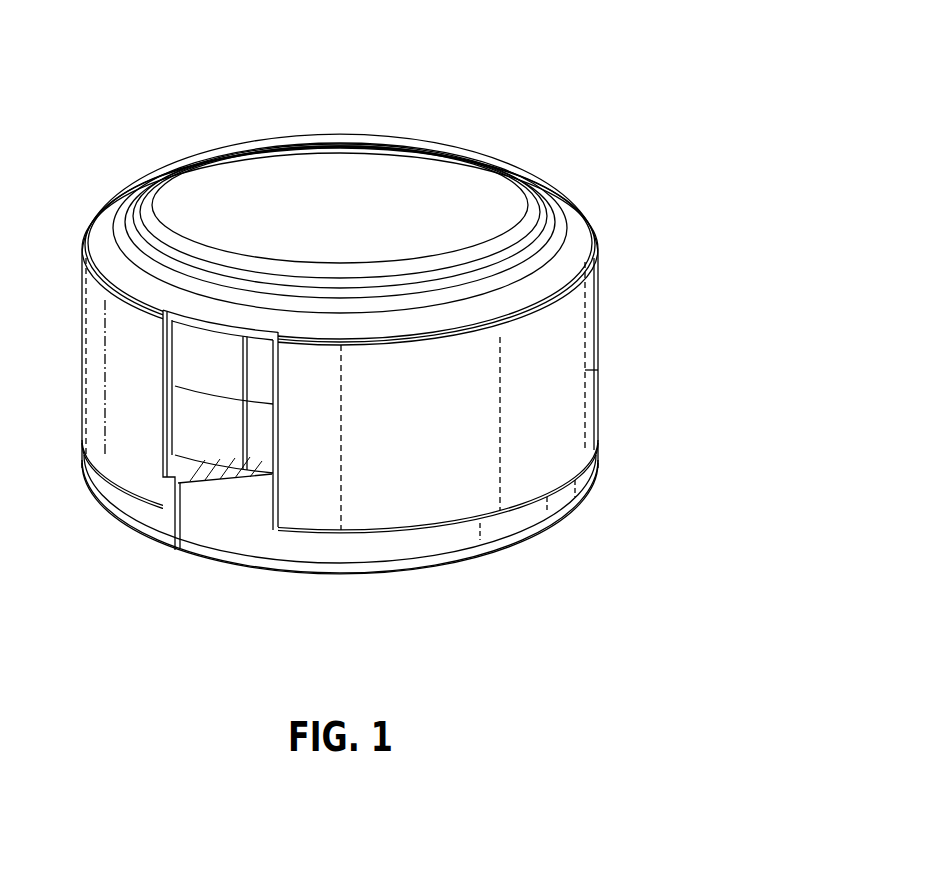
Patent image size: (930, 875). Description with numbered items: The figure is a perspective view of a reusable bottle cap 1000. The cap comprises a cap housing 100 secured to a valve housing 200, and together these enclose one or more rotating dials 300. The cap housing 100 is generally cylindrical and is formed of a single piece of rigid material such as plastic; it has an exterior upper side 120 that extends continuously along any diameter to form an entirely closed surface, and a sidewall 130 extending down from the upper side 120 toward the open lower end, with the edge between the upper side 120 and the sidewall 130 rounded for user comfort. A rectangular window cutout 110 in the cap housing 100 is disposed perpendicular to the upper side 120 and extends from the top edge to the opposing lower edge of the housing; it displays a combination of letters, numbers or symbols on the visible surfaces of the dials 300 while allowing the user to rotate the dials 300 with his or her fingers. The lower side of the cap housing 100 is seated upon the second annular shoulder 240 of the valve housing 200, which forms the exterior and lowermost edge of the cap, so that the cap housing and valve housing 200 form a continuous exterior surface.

The reusable bottle cap 1000 is at (592, 120).
The cap housing 100 is at (598, 302).
The exterior upper side 120 is at (234, 194).
The sidewall 130 is at (571, 377).
The valve housing 200 is at (597, 477).
The second annular shoulder 240 is at (408, 543).
The rotating dials 300 is at (188, 398).
The window cutout 110 is at (262, 472).